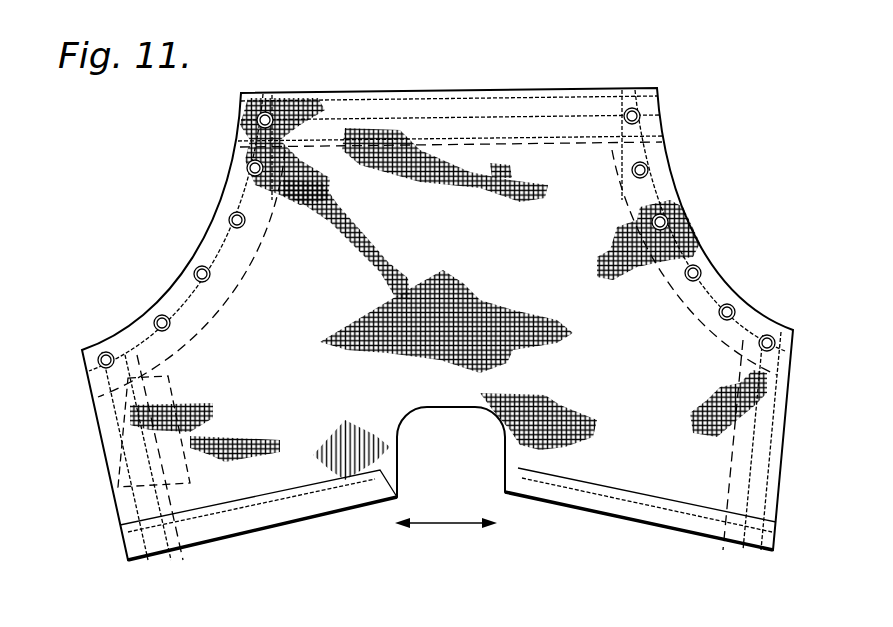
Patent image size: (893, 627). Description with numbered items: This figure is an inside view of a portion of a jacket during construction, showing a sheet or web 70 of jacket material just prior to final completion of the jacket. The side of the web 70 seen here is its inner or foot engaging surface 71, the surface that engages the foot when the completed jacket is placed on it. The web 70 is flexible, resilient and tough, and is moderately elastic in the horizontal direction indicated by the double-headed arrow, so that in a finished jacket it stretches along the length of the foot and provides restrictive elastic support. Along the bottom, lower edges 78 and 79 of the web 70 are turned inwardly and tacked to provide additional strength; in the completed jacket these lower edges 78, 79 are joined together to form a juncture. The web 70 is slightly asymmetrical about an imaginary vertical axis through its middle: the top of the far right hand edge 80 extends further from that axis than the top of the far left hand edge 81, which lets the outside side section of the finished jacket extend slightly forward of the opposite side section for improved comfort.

The web 70 is at (715, 240).
The inner or foot engaging surface 71 is at (653, 455).
The lower edge 78 is at (220, 527).
The lower edge 79 is at (697, 525).
The far right hand edge 80 is at (82, 350).
The far left hand edge 81 is at (795, 330).